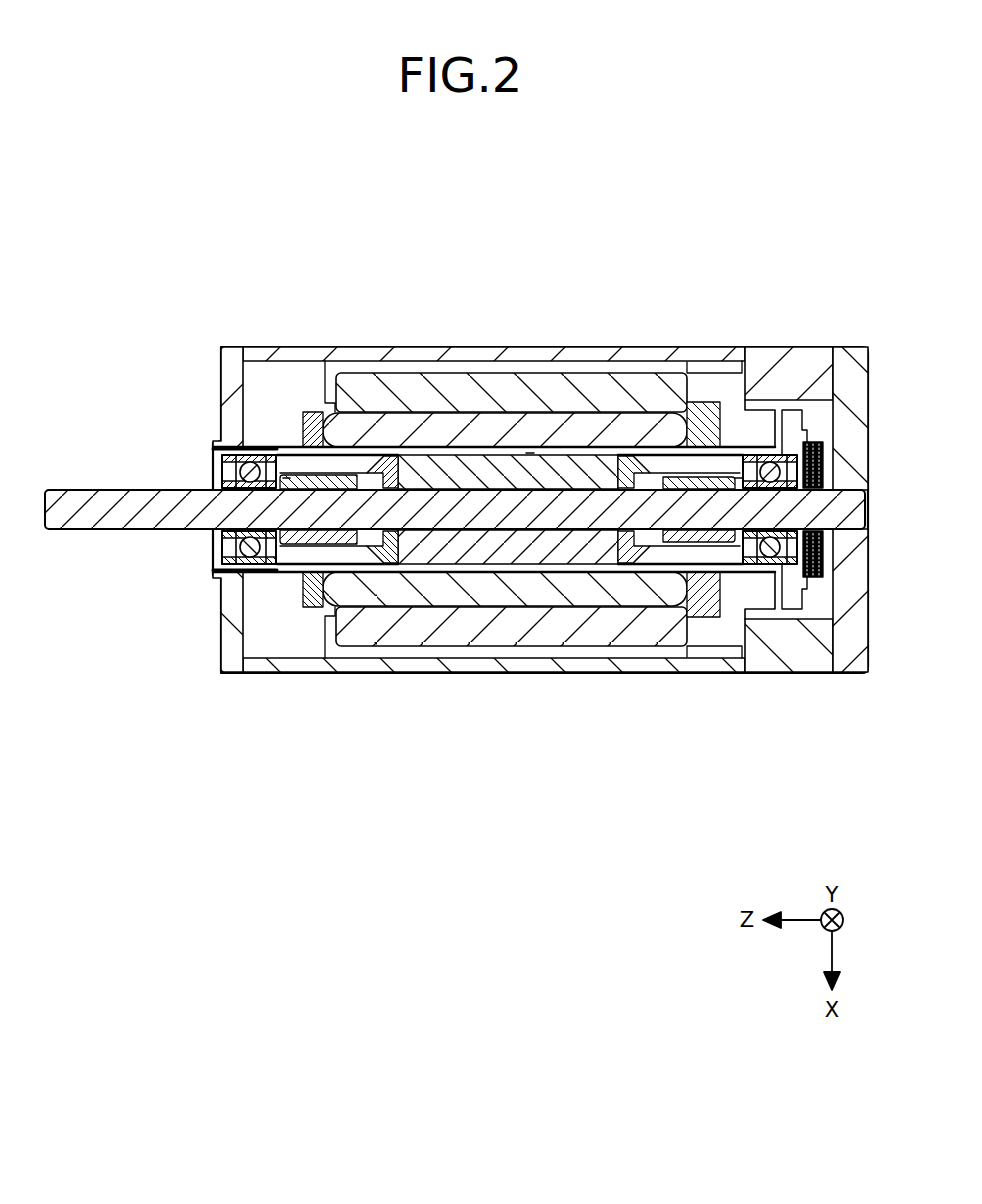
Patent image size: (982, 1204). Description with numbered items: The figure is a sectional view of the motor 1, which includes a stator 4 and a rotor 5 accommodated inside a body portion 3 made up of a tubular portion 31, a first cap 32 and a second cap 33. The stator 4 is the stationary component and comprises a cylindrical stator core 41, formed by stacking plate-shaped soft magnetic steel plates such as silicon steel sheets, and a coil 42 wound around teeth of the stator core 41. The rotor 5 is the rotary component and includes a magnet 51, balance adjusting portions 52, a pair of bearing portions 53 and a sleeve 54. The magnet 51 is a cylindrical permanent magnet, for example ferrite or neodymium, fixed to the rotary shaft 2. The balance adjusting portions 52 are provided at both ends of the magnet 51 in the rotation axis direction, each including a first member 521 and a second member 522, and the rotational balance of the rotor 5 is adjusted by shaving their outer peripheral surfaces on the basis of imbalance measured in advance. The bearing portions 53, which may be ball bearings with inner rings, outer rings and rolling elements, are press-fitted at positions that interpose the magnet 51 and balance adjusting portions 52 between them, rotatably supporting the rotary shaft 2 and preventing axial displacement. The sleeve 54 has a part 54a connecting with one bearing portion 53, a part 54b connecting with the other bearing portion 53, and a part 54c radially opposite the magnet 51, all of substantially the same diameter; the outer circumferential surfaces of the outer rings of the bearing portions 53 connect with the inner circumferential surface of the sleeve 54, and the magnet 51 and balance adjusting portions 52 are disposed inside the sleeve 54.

The motor 1 is at (461, 468).
The rotary shaft 2 is at (104, 490).
The body portion 3 is at (545, 578).
The tubular portion 31 is at (506, 667).
The first cap 32 is at (233, 675).
The second cap 33 is at (806, 550).
The stator 4 is at (494, 425).
The stator core 41 is at (672, 393).
The coil 42 is at (627, 427).
The rotor 5 is at (509, 378).
The magnet 51 is at (447, 475).
The balance adjusting portion 52 is at (510, 406).
The first member 521 is at (383, 452).
The second member 522 is at (320, 474).
The bearing portion 53 is at (467, 245).
The sleeve 54 is at (512, 325).
The part connecting with one bearing portion 54a is at (283, 480).
The part connecting with another bearing portion 54b is at (742, 476).
The part opposite to the magnet 54c is at (530, 452).